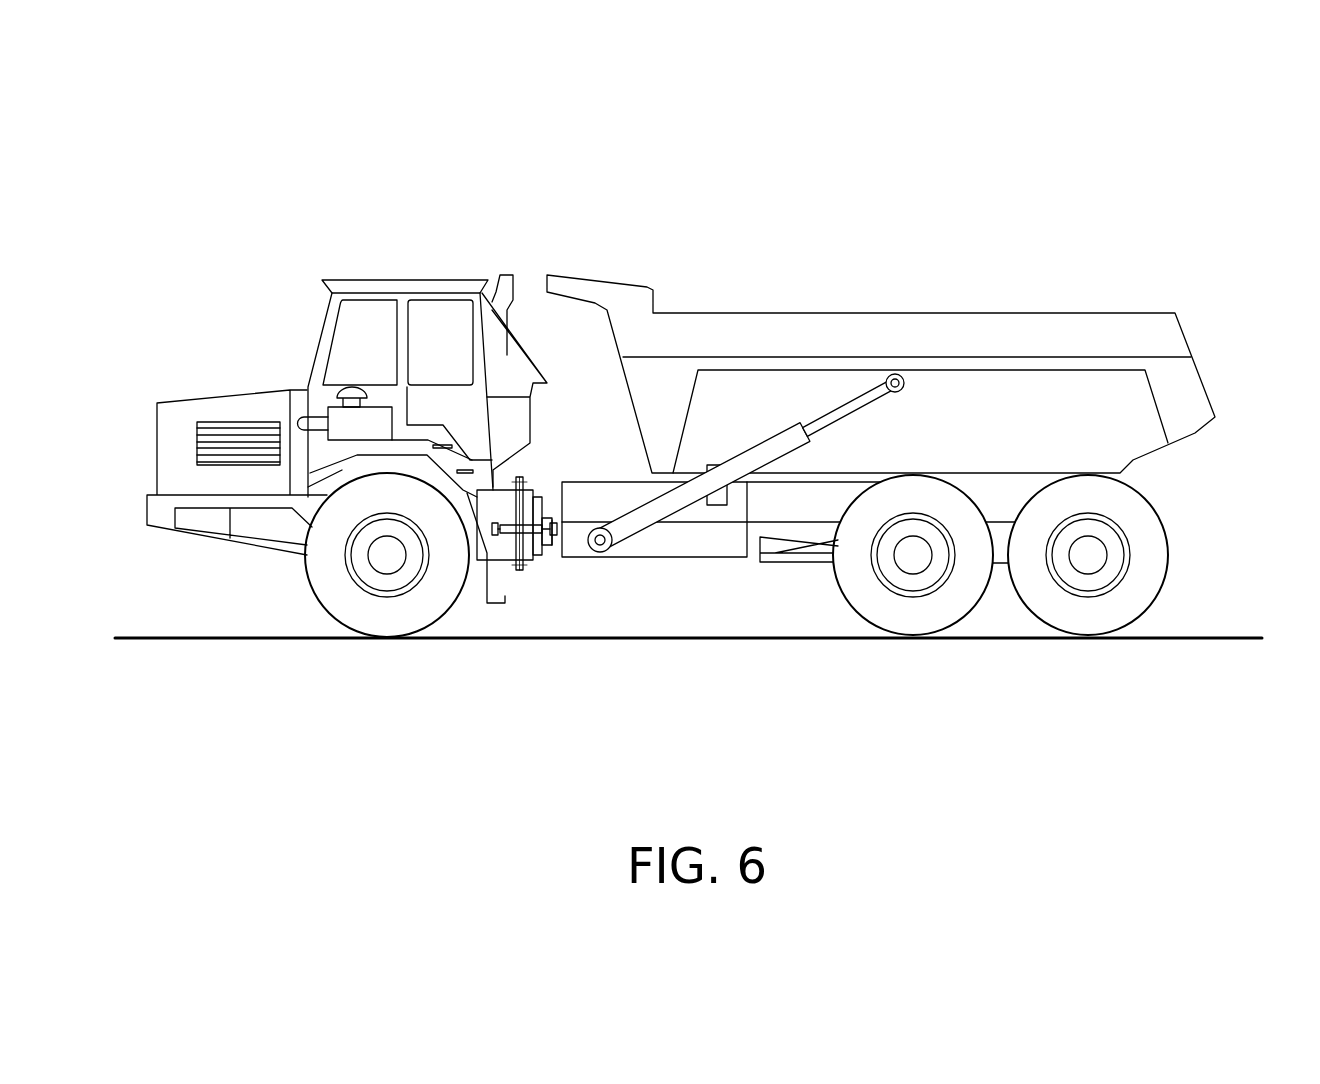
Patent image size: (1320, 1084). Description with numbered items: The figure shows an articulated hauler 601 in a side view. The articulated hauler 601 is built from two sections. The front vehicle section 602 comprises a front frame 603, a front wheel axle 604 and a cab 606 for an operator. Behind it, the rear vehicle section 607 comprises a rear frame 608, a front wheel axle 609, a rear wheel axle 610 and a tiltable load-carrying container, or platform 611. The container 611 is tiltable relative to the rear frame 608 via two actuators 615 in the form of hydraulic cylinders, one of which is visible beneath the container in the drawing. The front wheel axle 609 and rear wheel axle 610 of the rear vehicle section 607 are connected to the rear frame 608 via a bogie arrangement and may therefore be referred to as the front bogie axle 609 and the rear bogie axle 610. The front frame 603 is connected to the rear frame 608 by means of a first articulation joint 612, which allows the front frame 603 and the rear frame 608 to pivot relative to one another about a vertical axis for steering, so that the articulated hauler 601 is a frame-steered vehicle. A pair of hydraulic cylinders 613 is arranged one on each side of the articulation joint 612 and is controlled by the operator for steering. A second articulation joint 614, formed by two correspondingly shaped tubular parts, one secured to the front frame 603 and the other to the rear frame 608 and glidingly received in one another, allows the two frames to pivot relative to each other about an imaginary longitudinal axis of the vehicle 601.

The articulated hauler 601 is at (833, 226).
The front vehicle section 602 is at (410, 233).
The front frame 603 is at (497, 550).
The front wheel axle 604 is at (387, 555).
The cab 606 is at (421, 290).
The rear vehicle section 607 is at (985, 287).
The rear frame 608 is at (697, 543).
The front wheel axle 609 is at (913, 555).
The rear wheel axle 610 is at (1088, 555).
The load-carrying container 611 is at (1190, 383).
The first articulation joint 612 is at (525, 557).
The hydraulic cylinders 613 is at (545, 548).
The second articulation joint 614 is at (558, 615).
The actuators 615 is at (730, 473).